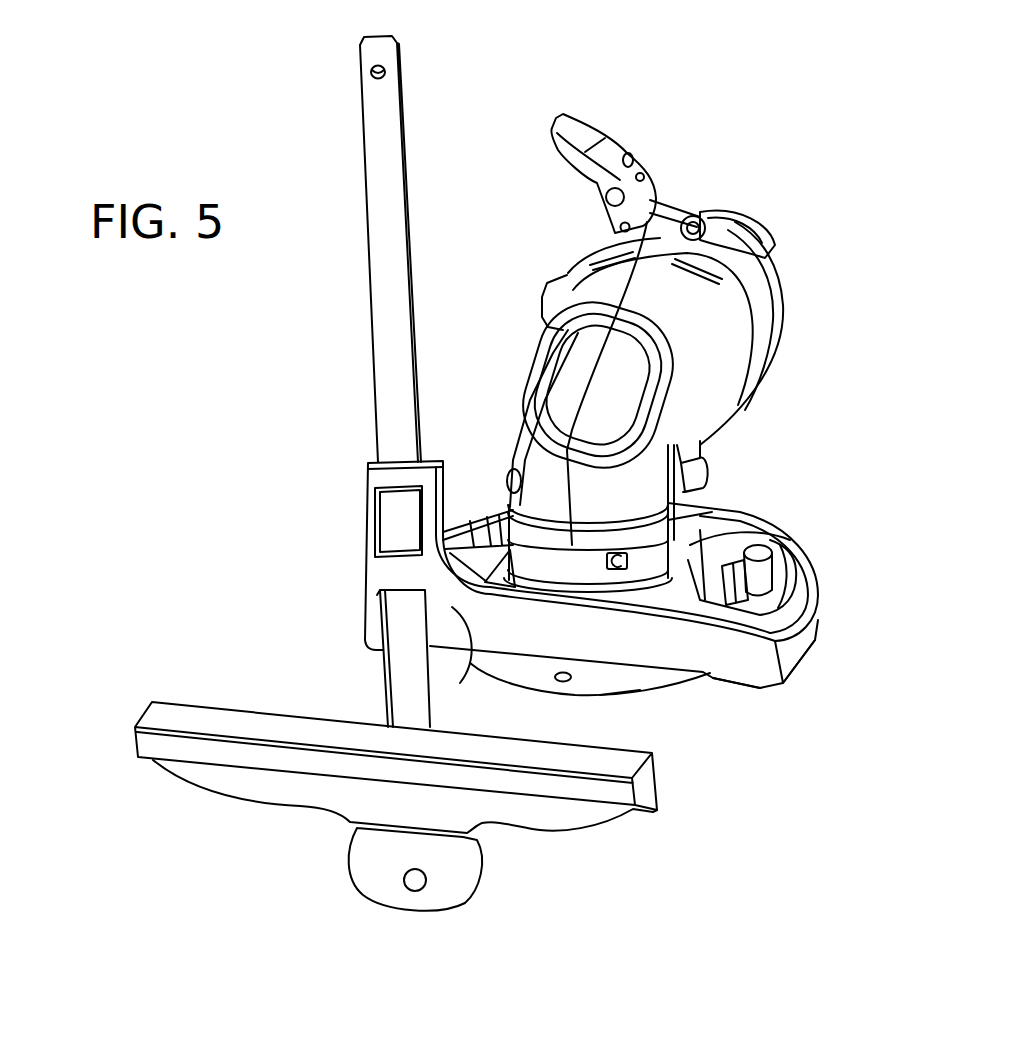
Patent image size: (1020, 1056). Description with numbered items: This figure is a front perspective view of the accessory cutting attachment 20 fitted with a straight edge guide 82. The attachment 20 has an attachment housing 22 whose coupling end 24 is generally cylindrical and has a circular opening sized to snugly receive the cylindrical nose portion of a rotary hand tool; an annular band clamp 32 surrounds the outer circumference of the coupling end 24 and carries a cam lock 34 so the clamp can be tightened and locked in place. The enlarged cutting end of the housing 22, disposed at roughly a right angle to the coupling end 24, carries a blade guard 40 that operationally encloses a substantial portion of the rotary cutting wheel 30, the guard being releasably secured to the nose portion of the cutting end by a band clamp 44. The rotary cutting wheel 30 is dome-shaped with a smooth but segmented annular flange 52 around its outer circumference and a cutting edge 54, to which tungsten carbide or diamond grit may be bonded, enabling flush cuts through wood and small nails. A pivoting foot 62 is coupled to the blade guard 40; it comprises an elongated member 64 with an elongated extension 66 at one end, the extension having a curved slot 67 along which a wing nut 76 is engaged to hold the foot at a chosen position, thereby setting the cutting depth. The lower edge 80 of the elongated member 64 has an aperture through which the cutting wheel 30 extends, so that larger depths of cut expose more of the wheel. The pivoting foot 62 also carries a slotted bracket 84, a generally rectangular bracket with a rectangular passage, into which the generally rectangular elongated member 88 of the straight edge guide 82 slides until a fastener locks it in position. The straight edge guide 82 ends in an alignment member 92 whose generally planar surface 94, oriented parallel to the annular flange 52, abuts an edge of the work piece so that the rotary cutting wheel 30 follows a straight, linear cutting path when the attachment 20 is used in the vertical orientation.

The accessory cutting attachment 20 is at (738, 170).
The attachment housing 22 is at (712, 425).
The coupling end 24 is at (763, 243).
The rotary cutting wheel 30 is at (661, 634).
The annular band clamp 32 is at (760, 291).
The cam lock 34 is at (578, 120).
The blade guard 40 is at (793, 650).
The band clamp 44 is at (663, 547).
The annular flange 52 is at (533, 662).
The cutting edge 54 is at (613, 700).
The pivoting foot 62 is at (735, 655).
The elongated member 64 is at (463, 664).
The elongated extension 66 is at (797, 584).
The curved slot 67 is at (785, 580).
The wing nut 76 is at (768, 552).
The lower edge 80 is at (583, 670).
The straight edge guide 82 is at (330, 520).
The slotted bracket 84 is at (368, 600).
The elongated member 88 is at (385, 310).
The alignment member 92 is at (133, 738).
The planar surface 94 is at (242, 723).